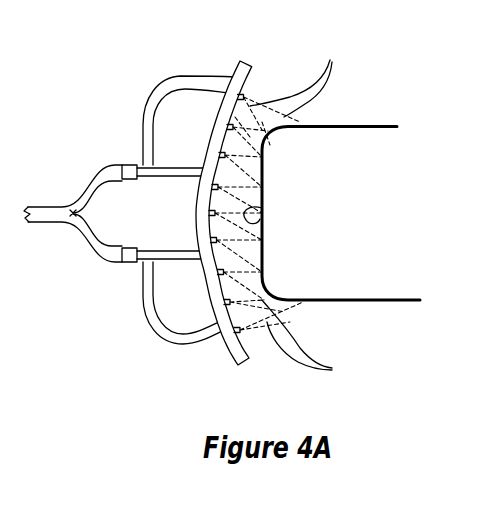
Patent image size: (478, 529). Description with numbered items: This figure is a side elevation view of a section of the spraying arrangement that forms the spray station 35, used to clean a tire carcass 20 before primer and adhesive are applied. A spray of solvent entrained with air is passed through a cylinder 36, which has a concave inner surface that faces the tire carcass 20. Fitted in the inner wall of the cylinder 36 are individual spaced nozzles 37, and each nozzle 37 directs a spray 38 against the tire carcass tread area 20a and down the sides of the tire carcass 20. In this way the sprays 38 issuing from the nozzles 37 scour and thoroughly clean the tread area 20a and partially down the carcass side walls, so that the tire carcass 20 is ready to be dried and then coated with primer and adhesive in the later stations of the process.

The spray station 35 is at (97, 139).
The cylinder 36 is at (233, 75).
The nozzle 37 is at (236, 111).
The spray 38 is at (305, 211).
The tire carcass 20 is at (364, 124).
The tire carcass tread area 20a is at (262, 208).